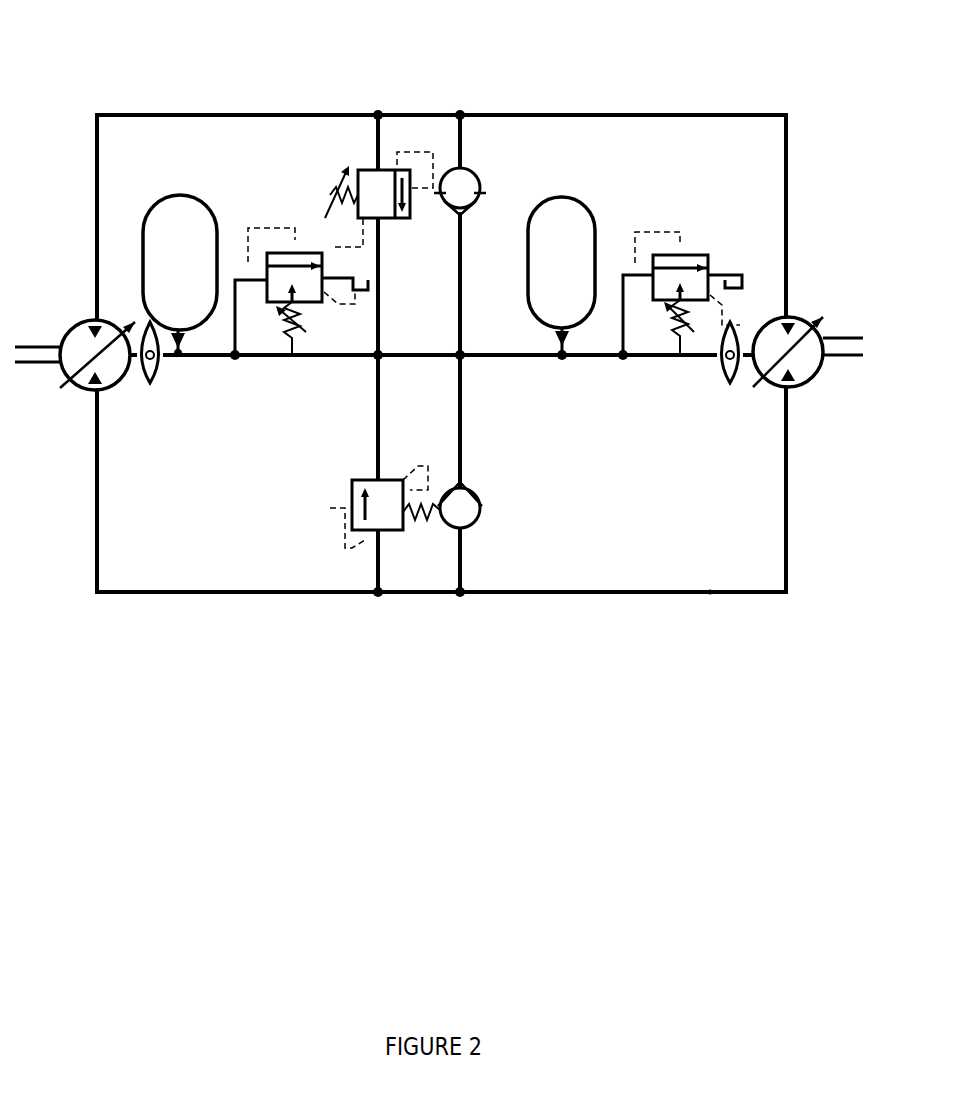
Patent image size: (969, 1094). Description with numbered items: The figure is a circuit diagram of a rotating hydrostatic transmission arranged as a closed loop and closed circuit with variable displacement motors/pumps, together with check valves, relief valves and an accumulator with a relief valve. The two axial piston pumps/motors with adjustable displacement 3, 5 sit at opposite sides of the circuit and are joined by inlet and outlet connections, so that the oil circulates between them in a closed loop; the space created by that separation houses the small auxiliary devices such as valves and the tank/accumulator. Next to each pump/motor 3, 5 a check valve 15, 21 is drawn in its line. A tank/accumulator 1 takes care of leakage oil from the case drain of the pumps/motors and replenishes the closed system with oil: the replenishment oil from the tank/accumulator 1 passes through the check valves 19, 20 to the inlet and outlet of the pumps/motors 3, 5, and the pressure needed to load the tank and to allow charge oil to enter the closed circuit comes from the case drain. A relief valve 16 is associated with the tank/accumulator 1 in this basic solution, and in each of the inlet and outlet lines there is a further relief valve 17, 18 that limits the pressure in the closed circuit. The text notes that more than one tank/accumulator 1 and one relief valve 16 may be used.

The tank/accumulator 1 is at (186, 303).
The axial piston pump/motor with adjustable displacement 3 is at (60, 388).
The axial piston pump/motor with adjustable displacement 5 is at (787, 316).
The check valve 15 is at (151, 324).
The relief valve 16 is at (292, 286).
The relief valve 17 is at (378, 515).
The relief valve 18 is at (383, 203).
The check valve 19 is at (460, 530).
The check valve 20 is at (464, 212).
The check valve 21 is at (729, 324).